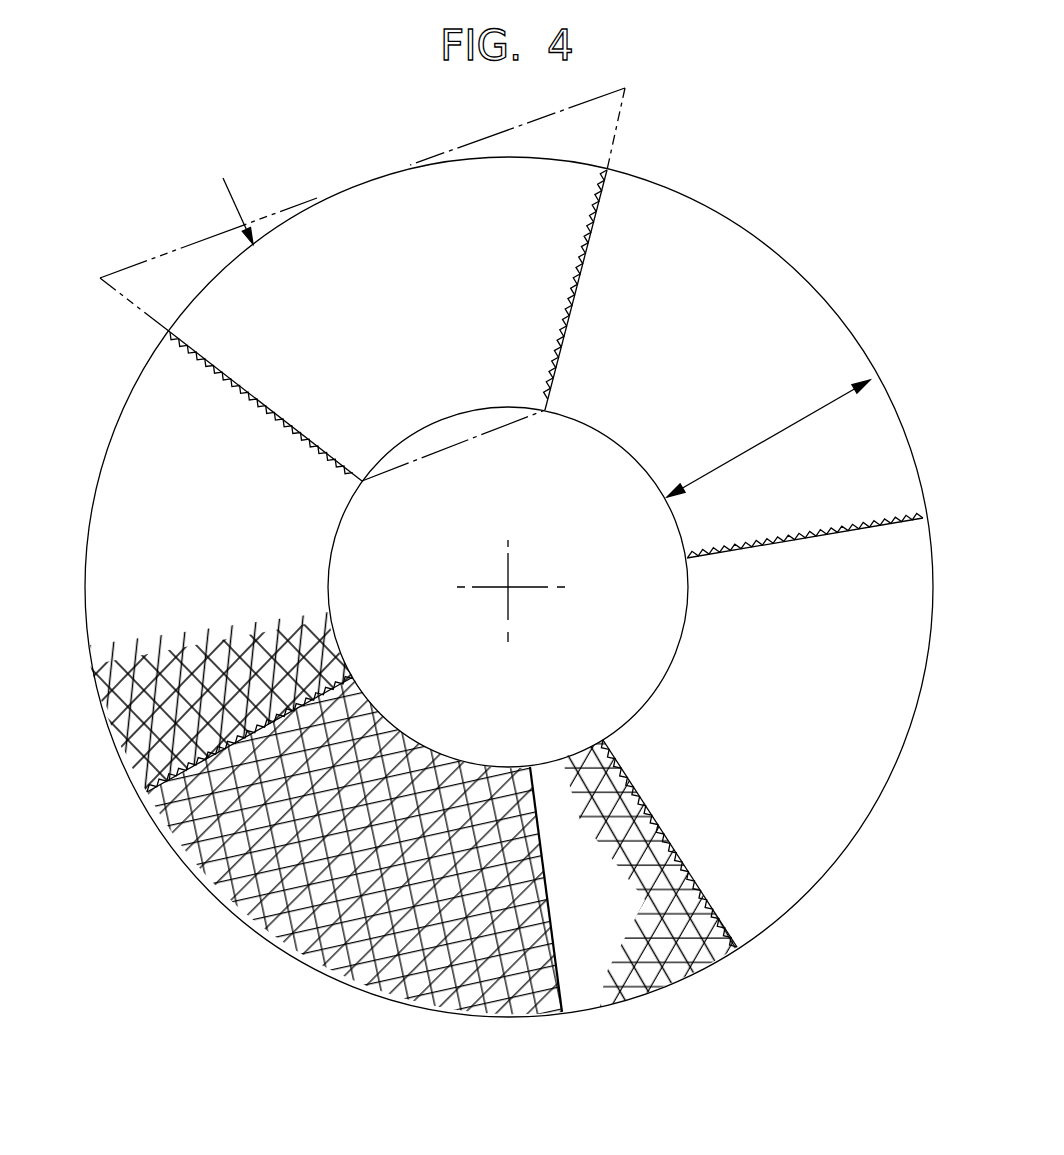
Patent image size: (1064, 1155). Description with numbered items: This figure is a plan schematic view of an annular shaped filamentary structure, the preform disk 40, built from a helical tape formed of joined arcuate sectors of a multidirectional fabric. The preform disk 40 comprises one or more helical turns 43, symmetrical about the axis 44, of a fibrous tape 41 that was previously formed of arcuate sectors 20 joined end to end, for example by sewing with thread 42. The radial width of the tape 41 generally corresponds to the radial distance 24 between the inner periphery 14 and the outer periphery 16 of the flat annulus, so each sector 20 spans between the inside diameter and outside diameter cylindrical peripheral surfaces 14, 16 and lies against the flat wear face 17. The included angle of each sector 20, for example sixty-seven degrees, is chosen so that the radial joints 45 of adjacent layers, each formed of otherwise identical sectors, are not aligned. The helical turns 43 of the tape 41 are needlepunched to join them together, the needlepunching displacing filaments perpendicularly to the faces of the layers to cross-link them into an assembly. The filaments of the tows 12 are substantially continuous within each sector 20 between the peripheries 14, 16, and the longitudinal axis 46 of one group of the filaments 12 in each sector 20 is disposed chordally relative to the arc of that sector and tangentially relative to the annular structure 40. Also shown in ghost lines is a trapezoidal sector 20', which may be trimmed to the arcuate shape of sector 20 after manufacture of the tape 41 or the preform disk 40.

The tows 12 is at (395, 968).
The inside diameter peripheral surface 14 is at (667, 667).
The outside diameter peripheral surface 16 is at (835, 862).
The wear face 17 is at (785, 761).
The arcuate sector 20 is at (510, 577).
The trapezoidal sector 20' is at (208, 249).
The radial distance 24 is at (750, 448).
The preform disk 40 is at (230, 193).
The fibrous tape 41 is at (713, 210).
The thread 42 is at (727, 913).
The helical turns 43 is at (533, 1017).
The axis 44 is at (508, 587).
The radial joints 45 is at (823, 535).
The longitudinal axis 46 is at (330, 967).